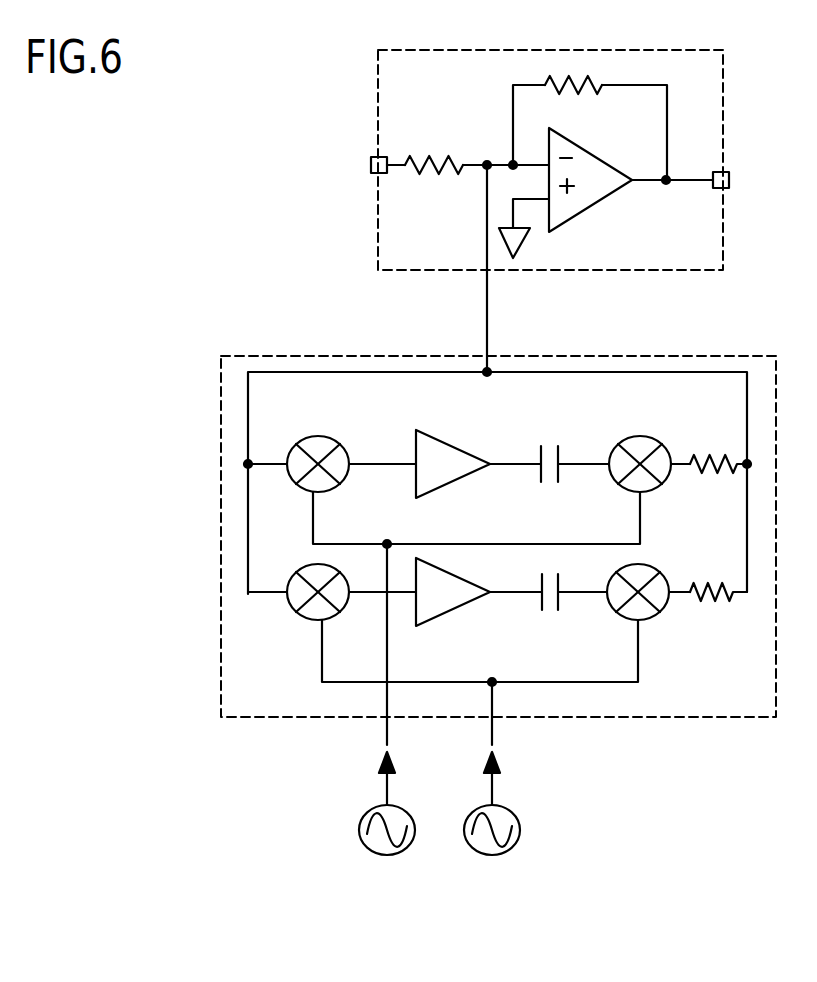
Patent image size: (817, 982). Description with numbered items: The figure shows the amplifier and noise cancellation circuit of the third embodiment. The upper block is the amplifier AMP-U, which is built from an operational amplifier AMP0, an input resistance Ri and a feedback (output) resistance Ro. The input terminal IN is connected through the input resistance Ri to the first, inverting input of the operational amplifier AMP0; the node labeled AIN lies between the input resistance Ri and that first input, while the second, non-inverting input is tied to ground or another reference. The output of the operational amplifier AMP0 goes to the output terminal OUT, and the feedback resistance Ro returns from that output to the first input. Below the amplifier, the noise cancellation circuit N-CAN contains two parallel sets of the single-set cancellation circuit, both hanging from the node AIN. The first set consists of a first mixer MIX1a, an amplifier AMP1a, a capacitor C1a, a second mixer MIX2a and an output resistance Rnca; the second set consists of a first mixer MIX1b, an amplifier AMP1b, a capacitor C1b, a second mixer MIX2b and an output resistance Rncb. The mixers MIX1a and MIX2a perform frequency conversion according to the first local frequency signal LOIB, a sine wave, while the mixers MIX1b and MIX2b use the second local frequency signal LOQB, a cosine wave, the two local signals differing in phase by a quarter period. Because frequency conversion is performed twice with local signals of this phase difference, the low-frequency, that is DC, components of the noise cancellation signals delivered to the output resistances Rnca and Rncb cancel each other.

The amplifier AMP-U is at (550, 140).
The input terminal IN is at (362, 160).
The amplifier input node AIN is at (492, 252).
The input resistance Ri is at (477, 187).
The feedback resistance Ro is at (590, 128).
The operational amplifier AMP0 is at (571, 196).
The output terminal OUT is at (721, 188).
The noise cancellation circuit N-CAN is at (498, 514).
The first mixer MIX1a is at (444, 470).
The amplifier AMP1a is at (474, 447).
The capacitor C1a is at (567, 484).
The second mixer MIX2a is at (649, 444).
The output resistance Rnca is at (715, 488).
The first mixer MIX1b is at (443, 623).
The amplifier AMP1b is at (475, 609).
The capacitor C1b is at (566, 610).
The second mixer MIX2b is at (664, 576).
The output resistance Rncb is at (716, 615).
The first local frequency signal LOIB is at (362, 717).
The second local frequency signal LOQB is at (537, 786).